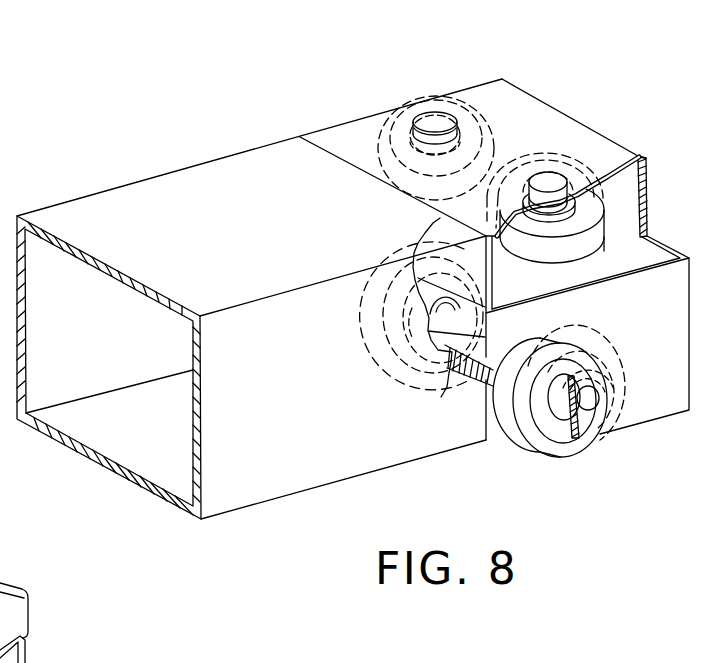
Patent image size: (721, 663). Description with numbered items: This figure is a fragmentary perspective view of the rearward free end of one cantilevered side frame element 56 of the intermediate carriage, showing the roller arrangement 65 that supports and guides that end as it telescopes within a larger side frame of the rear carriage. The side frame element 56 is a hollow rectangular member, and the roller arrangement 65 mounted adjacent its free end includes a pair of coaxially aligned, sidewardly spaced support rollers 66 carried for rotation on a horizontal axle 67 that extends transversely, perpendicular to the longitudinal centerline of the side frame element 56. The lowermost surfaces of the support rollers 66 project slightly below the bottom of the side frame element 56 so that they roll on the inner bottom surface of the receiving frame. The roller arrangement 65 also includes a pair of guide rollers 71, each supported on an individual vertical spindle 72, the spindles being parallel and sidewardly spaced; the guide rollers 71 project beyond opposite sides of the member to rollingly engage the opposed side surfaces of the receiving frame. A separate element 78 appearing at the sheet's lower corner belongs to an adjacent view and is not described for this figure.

The side frame element 56 is at (178, 179).
The roller arrangement 65 is at (533, 94).
The support roller 66 is at (396, 374).
The axle 67 is at (441, 397).
The guide roller 71 is at (387, 107).
The spindle 72 is at (434, 120).
The bracket (adjacent figure fragment) 78 is at (23, 585).